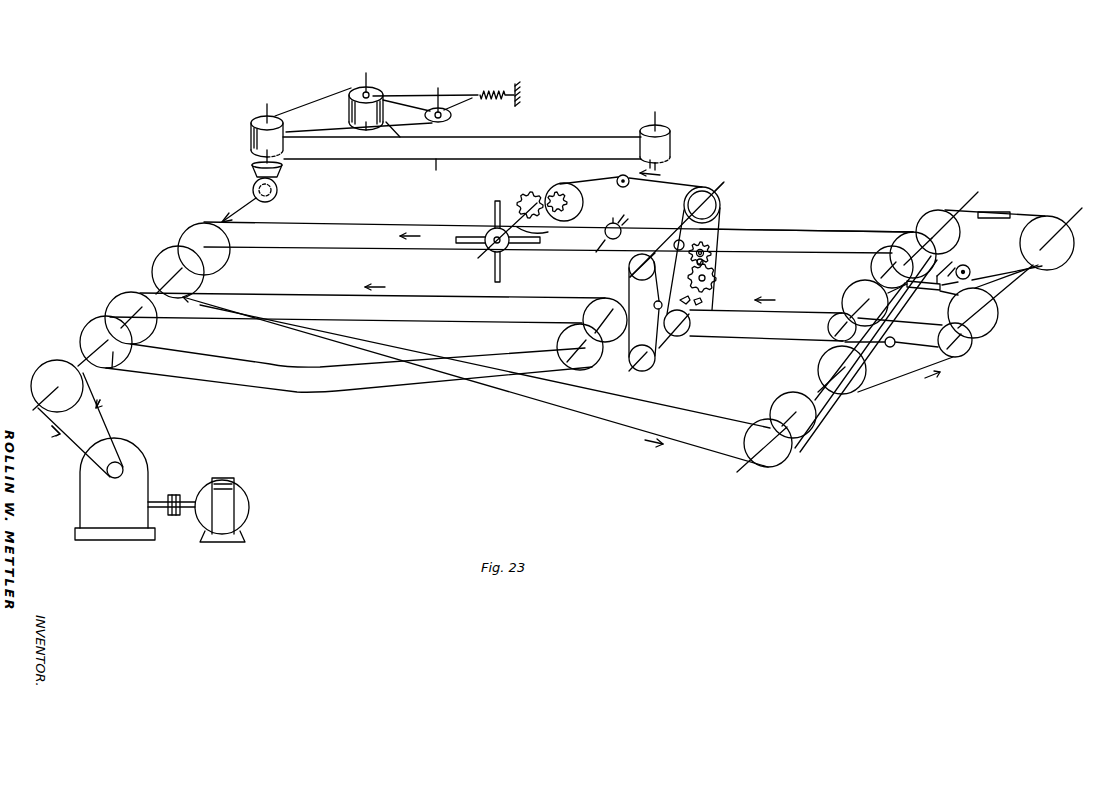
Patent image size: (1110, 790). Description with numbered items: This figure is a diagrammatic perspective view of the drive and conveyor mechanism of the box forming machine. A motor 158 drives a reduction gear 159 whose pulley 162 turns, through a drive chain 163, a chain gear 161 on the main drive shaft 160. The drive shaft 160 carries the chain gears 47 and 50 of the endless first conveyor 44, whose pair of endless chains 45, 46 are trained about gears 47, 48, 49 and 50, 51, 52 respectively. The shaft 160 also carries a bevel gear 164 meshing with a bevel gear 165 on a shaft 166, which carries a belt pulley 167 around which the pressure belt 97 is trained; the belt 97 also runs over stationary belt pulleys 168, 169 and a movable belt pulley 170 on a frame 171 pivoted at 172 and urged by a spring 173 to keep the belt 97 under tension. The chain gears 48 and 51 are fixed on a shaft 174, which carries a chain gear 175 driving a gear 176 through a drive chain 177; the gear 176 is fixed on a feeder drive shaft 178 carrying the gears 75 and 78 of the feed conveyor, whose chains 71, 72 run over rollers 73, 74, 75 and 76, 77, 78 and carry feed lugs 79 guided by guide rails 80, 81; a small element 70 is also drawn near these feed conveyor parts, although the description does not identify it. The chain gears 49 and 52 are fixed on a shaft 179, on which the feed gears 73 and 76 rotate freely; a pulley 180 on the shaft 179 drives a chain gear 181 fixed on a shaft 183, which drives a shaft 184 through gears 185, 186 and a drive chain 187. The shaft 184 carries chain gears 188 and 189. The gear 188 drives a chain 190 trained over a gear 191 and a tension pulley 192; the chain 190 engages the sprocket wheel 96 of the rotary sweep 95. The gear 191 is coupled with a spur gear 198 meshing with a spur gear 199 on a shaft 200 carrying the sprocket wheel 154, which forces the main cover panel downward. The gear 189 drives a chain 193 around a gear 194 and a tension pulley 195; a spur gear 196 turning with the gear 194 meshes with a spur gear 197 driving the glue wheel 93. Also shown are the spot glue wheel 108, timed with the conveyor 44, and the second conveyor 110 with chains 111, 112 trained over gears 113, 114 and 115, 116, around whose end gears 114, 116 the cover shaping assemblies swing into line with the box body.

The endless first conveyor 44 is at (376, 222).
The endless chain 45 is at (783, 230).
The endless chain 46 is at (832, 253).
The chain gear 47 is at (201, 222).
The chain gear 48 is at (783, 400).
The chain gear 49 is at (910, 232).
The chain gear 50 is at (167, 250).
The chain gear 51 is at (778, 463).
The chain gear 52 is at (872, 269).
The pivot bracket 70 is at (950, 266).
The endless chain 71 is at (1027, 219).
The endless chain 72 is at (988, 290).
The roller 73 is at (940, 210).
The roller 74 is at (972, 269).
The roller 75 is at (1055, 268).
The roller 76 is at (852, 292).
The roller 77 is at (1022, 278).
The roller 78 is at (998, 310).
The feed lug 79 is at (996, 210).
The guide rail 80 is at (1012, 211).
The guide rail 81 is at (926, 291).
The glue wheel 93 is at (712, 246).
The rotary sweep 95 is at (626, 220).
The sprocket wheel 96 is at (604, 244).
The pressure belt 97 is at (572, 135).
The spot glue wheel 108 is at (690, 318).
The second conveyor 110 is at (415, 298).
The endless chain 111 is at (340, 293).
The endless chain 112 is at (372, 320).
The gear 113 is at (128, 295).
The end gear 114 is at (586, 311).
The gear 115 is at (112, 365).
The end gear 116 is at (587, 362).
The sprocket wheel 154 is at (490, 230).
The motor 158 is at (247, 498).
The reduction gear 159 is at (118, 508).
The main drive shaft 160 is at (80, 352).
The chain gear 161 is at (38, 390).
The pulley 162 is at (124, 468).
The drive chain 163 is at (72, 448).
The bevel gear 164 is at (278, 192).
The bevel gear 165 is at (252, 167).
The shaft 166 is at (268, 105).
The belt pulley 167 is at (258, 122).
The belt pulley 168 is at (452, 115).
The belt pulley 169 is at (668, 128).
The movable belt pulley 170 is at (348, 112).
The frame 171 is at (404, 96).
The pivot 172 is at (440, 95).
The spring 173 is at (495, 88).
The shaft 174 is at (740, 470).
The chain gear 175 is at (855, 390).
The gear 176 is at (963, 354).
The drive chain 177 is at (895, 380).
The feeder drive shaft 178 is at (1077, 212).
The shaft 179 is at (970, 192).
The pulley 180 is at (829, 324).
The chain gear 181 is at (680, 336).
The shaft 183 is at (630, 370).
The shaft 184 is at (726, 184).
The gear 185 is at (655, 361).
The gear 186 is at (628, 269).
The drive chain 187 is at (630, 336).
The chain gear 188 is at (708, 188).
The chain gear 189 is at (716, 207).
The chain 190 is at (668, 183).
The chain gear 191 is at (556, 190).
The tension pulley 192 is at (623, 188).
The chain 193 is at (722, 224).
The gear 194 is at (703, 300).
The tension pulley 195 is at (673, 243).
The spur gear 196 is at (716, 278).
The spur gear 197 is at (710, 262).
The spur gear 198 is at (560, 192).
The spur gear 199 is at (520, 200).
The shaft 200 is at (540, 233).